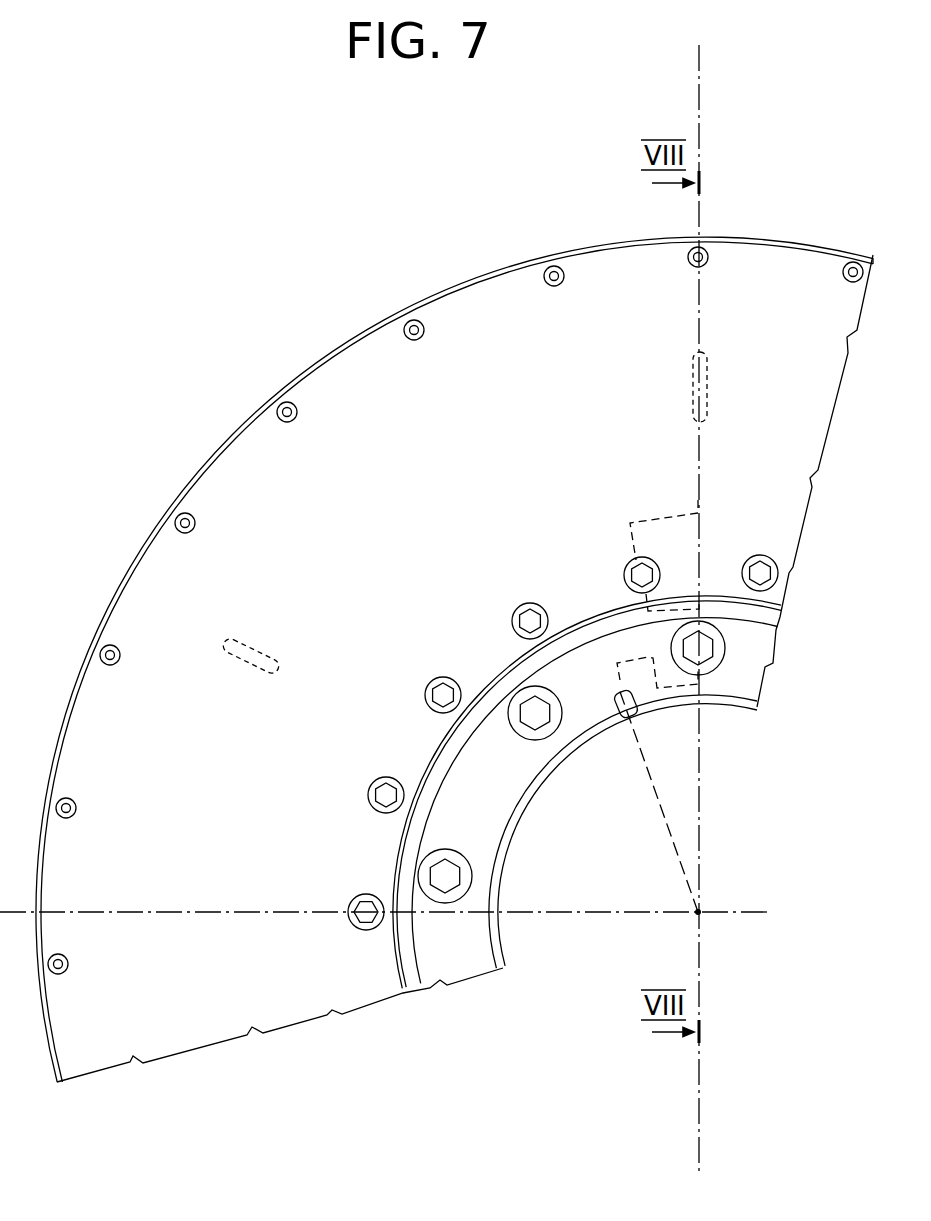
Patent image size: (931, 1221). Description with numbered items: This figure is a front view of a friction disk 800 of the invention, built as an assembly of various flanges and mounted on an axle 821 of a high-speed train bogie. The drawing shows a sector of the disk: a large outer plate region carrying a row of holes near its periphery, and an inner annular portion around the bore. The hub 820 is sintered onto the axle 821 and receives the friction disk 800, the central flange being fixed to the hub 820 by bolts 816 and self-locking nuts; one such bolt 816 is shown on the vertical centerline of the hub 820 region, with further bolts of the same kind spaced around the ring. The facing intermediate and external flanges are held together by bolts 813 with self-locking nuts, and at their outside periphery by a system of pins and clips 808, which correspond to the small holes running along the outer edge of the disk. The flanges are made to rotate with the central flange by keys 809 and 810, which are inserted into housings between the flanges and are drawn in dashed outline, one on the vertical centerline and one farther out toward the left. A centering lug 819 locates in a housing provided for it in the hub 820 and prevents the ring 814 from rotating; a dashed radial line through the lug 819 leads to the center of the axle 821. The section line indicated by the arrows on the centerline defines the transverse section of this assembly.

The friction disk 800 is at (486, 272).
The pins and clips 808 is at (708, 253).
The key 809 is at (709, 388).
The key 810 is at (252, 649).
The bolt 813 is at (632, 579).
The ring 814 is at (498, 802).
The bolt 816 is at (705, 658).
The centering lug 819 is at (622, 714).
The hub 820 is at (498, 913).
The axle 821 is at (648, 870).